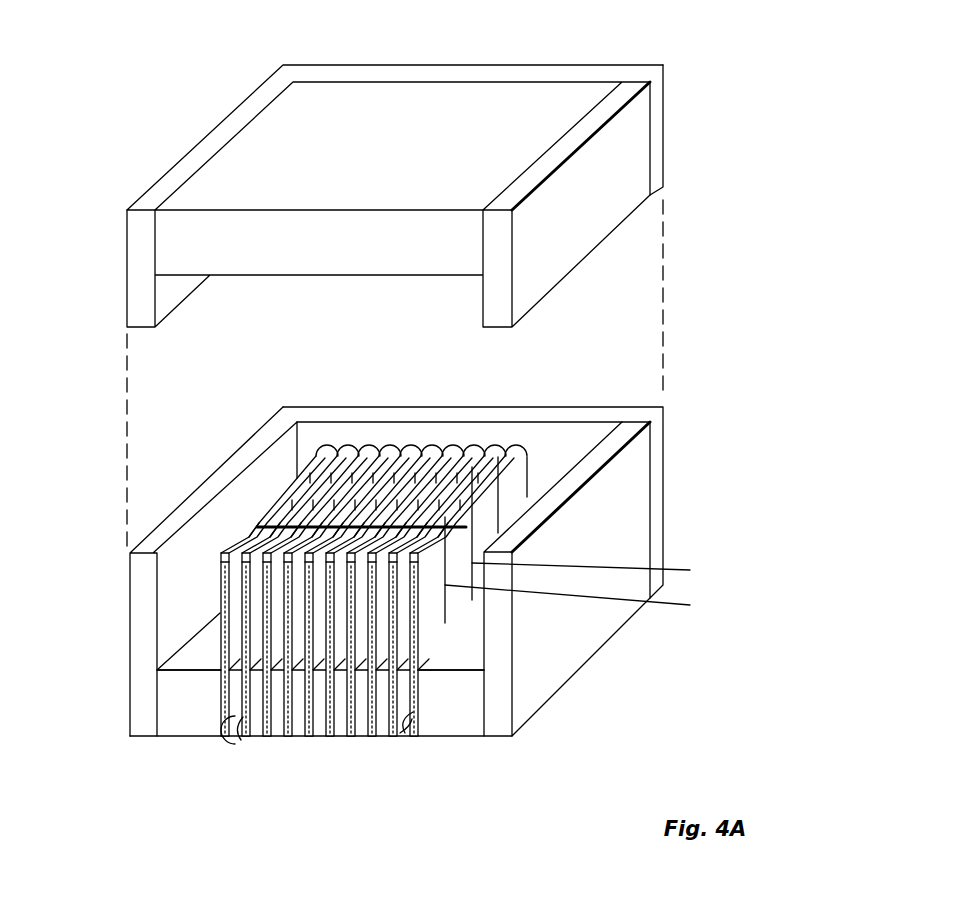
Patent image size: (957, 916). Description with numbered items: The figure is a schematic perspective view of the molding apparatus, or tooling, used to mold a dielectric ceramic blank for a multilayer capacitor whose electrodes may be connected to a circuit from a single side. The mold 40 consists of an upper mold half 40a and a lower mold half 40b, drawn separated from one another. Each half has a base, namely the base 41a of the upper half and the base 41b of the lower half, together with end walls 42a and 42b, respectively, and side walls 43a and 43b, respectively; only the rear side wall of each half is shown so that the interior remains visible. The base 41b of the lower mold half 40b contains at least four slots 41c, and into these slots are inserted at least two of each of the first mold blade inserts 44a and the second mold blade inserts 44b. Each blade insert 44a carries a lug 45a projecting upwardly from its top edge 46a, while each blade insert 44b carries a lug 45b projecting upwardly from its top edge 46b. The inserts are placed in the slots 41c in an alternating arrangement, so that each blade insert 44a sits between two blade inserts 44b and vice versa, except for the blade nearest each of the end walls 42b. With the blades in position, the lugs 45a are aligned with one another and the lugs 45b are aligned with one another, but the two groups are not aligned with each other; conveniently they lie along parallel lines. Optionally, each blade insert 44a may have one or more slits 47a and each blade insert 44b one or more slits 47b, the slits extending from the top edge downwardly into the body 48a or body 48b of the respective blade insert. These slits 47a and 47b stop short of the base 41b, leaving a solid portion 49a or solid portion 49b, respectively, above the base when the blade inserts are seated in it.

The mold 40 is at (694, 375).
The upper mold half 40a is at (637, 148).
The lower mold half 40b is at (538, 690).
The base 41a is at (527, 92).
The base 41b is at (465, 722).
The slots 41c is at (410, 720).
The end walls 42a is at (138, 260).
The end walls 42b is at (133, 687).
The side walls 43a is at (658, 104).
The side walls 43b is at (665, 427).
The first mold blade inserts 44a is at (237, 625).
The second mold blade inserts 44b is at (220, 593).
The lug 45a is at (440, 537).
The lug 45b is at (490, 450).
The top edge 46a is at (520, 469).
The top edge 46b is at (527, 490).
The slits 47a is at (692, 570).
The slits 47b is at (277, 498).
The body 48a is at (430, 607).
The body 48b is at (403, 622).
The solid portion 49a is at (428, 643).
The solid portion 49b is at (400, 650).